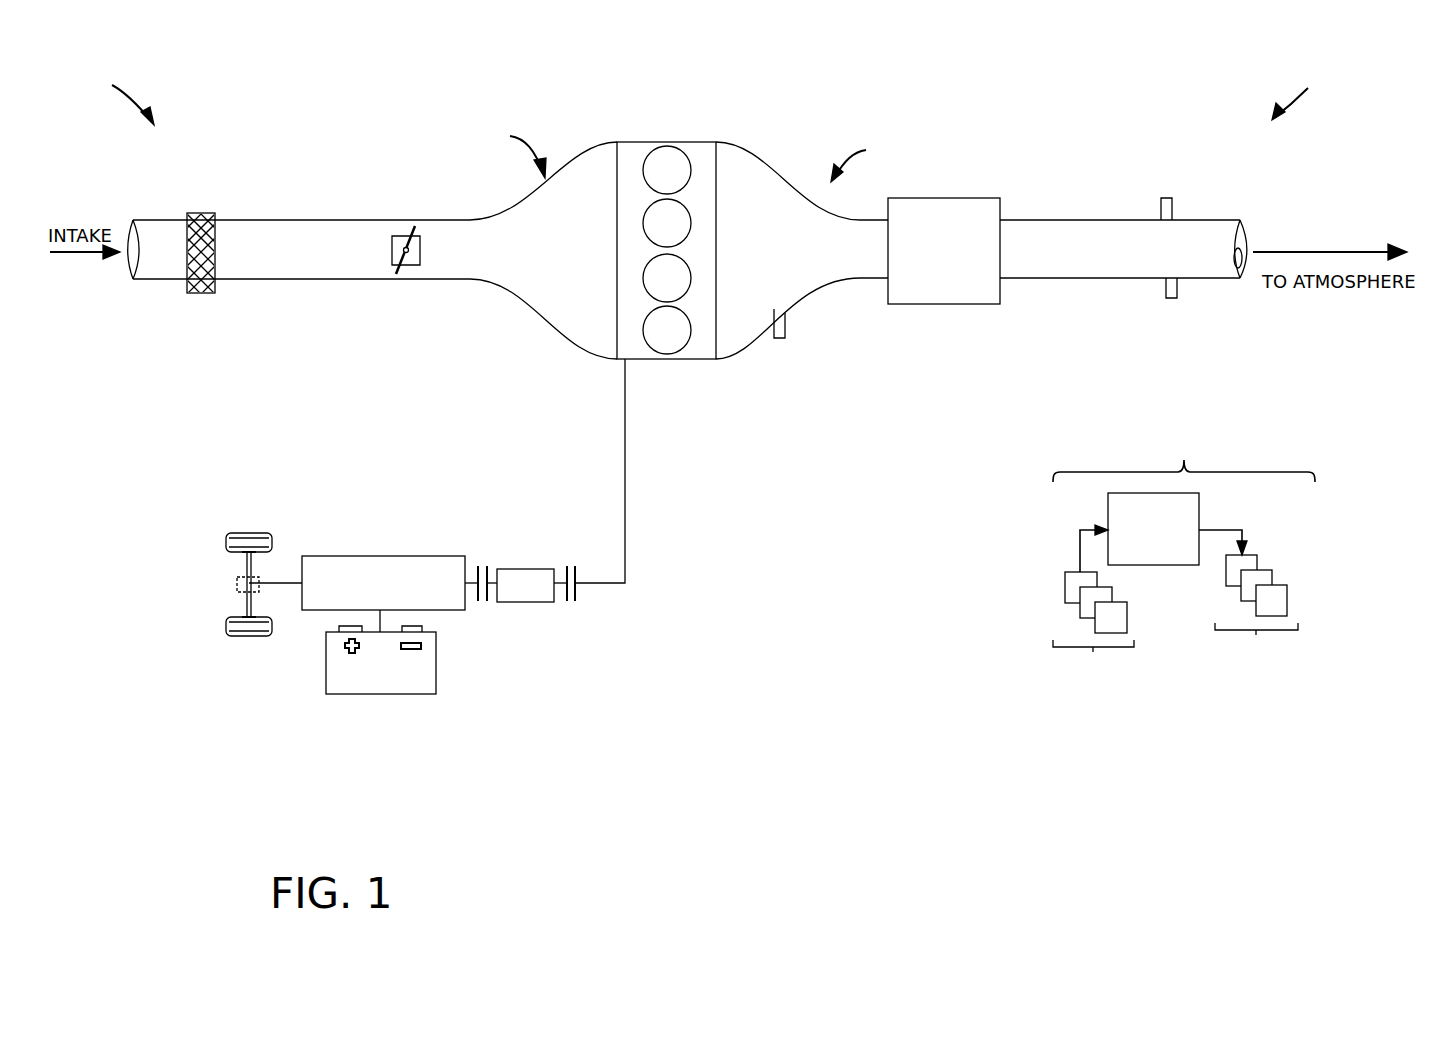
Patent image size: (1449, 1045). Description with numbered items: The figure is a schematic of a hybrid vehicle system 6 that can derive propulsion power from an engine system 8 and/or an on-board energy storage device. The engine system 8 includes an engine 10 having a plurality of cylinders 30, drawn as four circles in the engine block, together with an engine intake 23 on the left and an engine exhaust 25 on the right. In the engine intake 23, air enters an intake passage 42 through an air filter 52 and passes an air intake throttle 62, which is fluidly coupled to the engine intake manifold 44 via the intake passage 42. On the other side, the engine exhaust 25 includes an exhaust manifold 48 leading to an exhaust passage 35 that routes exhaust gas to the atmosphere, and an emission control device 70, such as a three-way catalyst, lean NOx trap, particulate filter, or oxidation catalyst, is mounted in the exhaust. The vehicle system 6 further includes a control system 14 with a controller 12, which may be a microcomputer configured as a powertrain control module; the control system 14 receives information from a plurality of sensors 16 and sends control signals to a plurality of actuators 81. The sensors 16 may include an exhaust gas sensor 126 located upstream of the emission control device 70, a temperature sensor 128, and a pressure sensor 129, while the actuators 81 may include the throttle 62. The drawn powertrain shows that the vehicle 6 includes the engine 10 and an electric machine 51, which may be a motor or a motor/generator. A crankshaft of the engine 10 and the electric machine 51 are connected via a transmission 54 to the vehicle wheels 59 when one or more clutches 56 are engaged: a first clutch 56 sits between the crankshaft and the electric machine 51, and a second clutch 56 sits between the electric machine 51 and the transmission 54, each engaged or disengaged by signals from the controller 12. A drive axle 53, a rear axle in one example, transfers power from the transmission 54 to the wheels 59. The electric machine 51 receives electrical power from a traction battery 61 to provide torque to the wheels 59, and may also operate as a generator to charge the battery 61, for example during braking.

The hybrid vehicle system 6 is at (119, 100).
The engine system 8 is at (1299, 95).
The engine 10 is at (716, 230).
The controller 12 is at (1153, 529).
The control system 14 is at (1184, 558).
The sensors 16 is at (1093, 610).
The engine intake 23 is at (512, 153).
The engine exhaust 25 is at (864, 160).
The cylinders 30 is at (688, 162).
The exhaust passage 35 is at (1219, 218).
The intake passage 42 is at (170, 279).
The engine intake manifold 44 is at (543, 250).
The exhaust manifold 48 is at (802, 250).
The electric machine 51 is at (528, 603).
The air filter 52 is at (201, 212).
The drive axle 53 is at (238, 586).
The transmission 54 is at (326, 611).
The clutches 56 is at (490, 567).
The vehicle wheels 59 is at (248, 637).
The traction battery 61 is at (386, 695).
The air intake throttle 62 is at (421, 256).
The emission control device 70 is at (930, 198).
The actuators 81 is at (1249, 603).
The exhaust gas sensor 126 is at (786, 318).
The temperature sensor 128 is at (1172, 300).
The pressure sensor 129 is at (1176, 182).